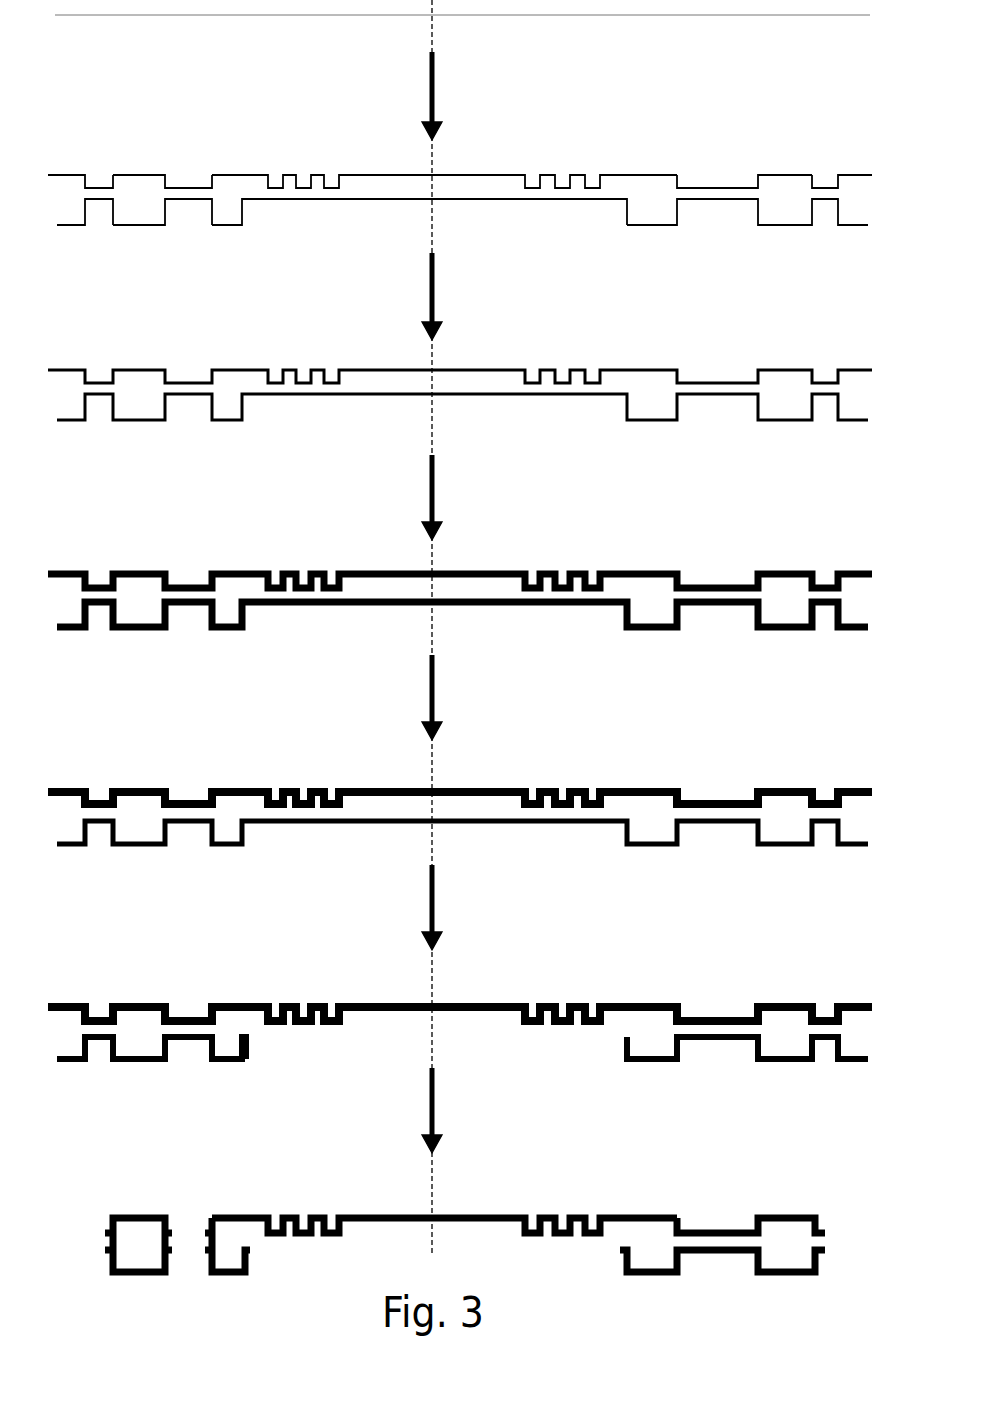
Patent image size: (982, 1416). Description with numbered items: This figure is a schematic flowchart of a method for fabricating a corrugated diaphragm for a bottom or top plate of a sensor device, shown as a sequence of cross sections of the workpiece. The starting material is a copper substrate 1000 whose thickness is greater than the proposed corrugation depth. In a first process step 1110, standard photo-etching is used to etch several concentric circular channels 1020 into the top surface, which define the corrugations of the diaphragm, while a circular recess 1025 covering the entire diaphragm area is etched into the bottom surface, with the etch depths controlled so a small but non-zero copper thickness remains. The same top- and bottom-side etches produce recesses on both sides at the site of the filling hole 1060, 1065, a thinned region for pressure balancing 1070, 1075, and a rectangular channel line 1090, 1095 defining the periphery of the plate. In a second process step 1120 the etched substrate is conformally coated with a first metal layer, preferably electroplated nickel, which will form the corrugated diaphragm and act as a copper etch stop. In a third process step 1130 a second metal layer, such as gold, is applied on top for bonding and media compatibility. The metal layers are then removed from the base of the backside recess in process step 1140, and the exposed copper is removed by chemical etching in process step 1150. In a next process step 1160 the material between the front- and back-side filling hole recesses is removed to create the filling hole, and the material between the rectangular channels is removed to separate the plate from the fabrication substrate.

The copper substrate 1000 is at (671, 0).
The rectangular channel line 1090 is at (92, 177).
The rectangular channel line 1095 is at (92, 226).
The filling hole recess 1060 is at (184, 177).
The filling hole recess 1065 is at (184, 226).
The concentric circular channels 1020 is at (565, 178).
The circular recess 1025 is at (448, 200).
The thinned region for pressure balancing 1070 is at (722, 186).
The thinned region for pressure balancing 1075 is at (724, 200).
The first process step 1110 is at (430, 97).
The second process step 1120 is at (420, 298).
The third process step 1130 is at (425, 505).
The metal layer removal process step 1140 is at (425, 700).
The chemical etching process step 1150 is at (425, 903).
The next process step 1160 is at (425, 1105).